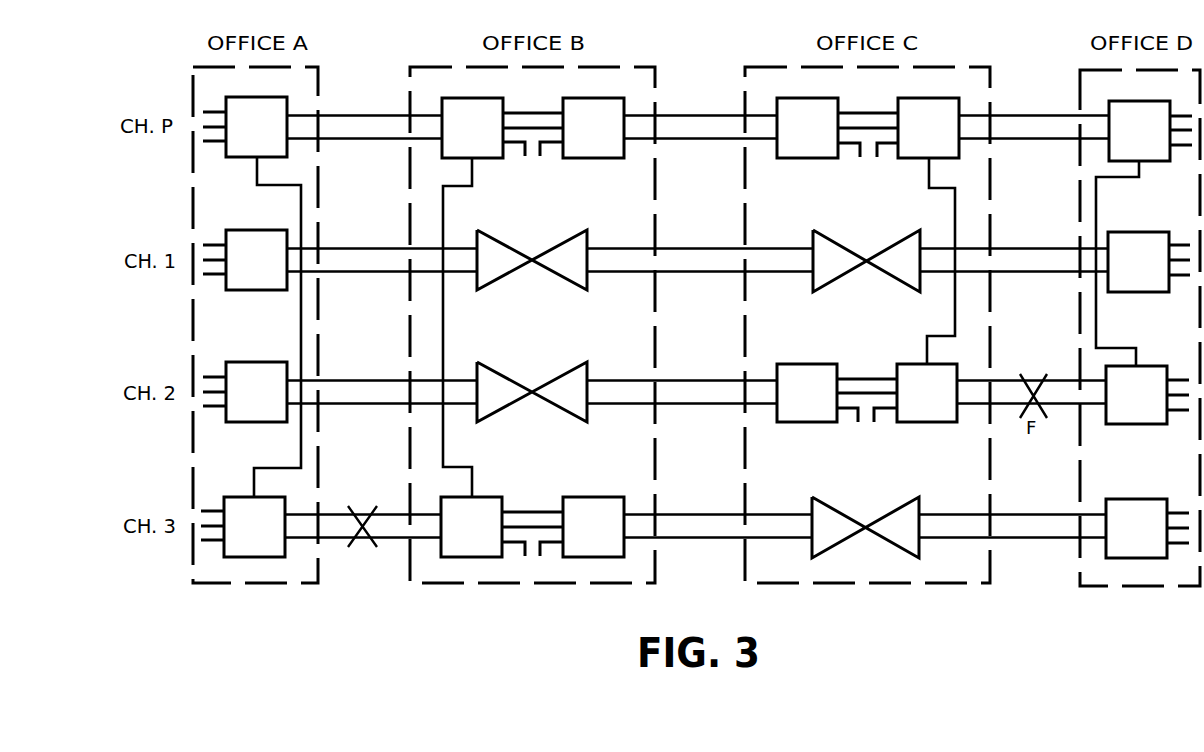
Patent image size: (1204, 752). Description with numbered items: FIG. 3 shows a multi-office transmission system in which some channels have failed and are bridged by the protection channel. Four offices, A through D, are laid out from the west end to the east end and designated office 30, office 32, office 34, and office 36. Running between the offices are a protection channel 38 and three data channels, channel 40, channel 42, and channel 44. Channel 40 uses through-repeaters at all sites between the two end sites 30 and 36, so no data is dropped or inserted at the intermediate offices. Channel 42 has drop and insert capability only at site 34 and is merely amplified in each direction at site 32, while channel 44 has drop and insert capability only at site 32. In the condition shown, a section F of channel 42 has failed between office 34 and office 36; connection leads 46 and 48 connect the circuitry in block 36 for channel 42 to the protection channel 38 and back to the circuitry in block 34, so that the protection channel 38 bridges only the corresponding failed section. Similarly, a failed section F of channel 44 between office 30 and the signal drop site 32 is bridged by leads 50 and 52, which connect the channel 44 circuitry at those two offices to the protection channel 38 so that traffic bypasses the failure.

The office A 30 is at (272, 337).
The office B 32 is at (551, 337).
The office C 34 is at (882, 339).
The office D 36 is at (1157, 342).
The protection channel 38 is at (365, 114).
The channel 1 40 is at (361, 247).
The channel 2 42 is at (363, 379).
The channel 3 44 is at (298, 513).
The connection lead 46 is at (1096, 215).
The connection lead 48 is at (955, 213).
The lead 50 is at (443, 212).
The lead 52 is at (301, 203).